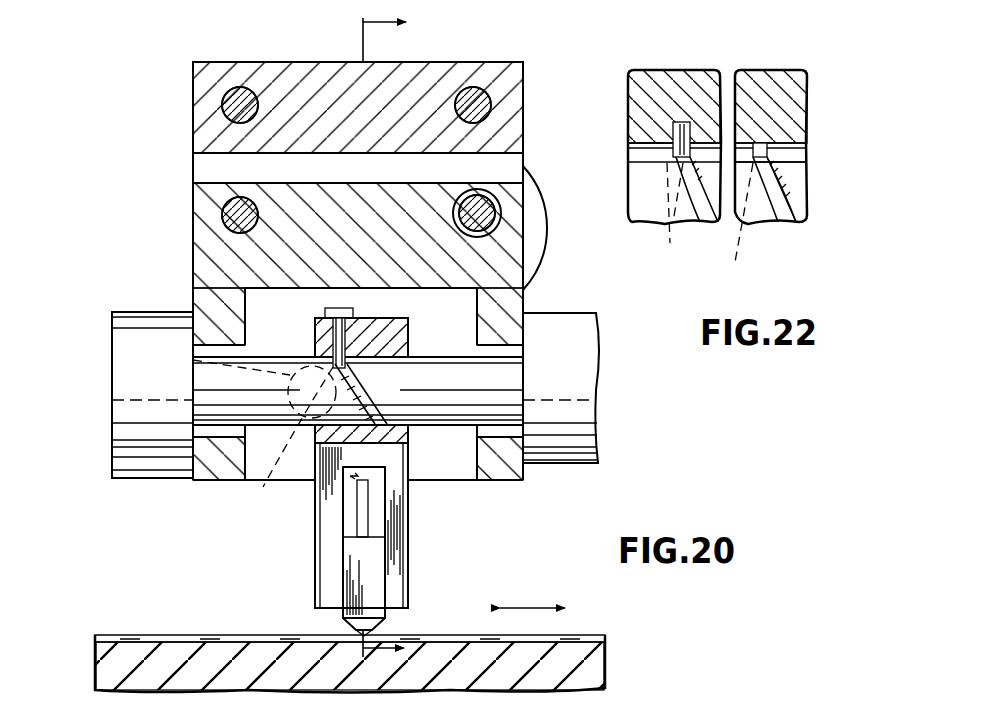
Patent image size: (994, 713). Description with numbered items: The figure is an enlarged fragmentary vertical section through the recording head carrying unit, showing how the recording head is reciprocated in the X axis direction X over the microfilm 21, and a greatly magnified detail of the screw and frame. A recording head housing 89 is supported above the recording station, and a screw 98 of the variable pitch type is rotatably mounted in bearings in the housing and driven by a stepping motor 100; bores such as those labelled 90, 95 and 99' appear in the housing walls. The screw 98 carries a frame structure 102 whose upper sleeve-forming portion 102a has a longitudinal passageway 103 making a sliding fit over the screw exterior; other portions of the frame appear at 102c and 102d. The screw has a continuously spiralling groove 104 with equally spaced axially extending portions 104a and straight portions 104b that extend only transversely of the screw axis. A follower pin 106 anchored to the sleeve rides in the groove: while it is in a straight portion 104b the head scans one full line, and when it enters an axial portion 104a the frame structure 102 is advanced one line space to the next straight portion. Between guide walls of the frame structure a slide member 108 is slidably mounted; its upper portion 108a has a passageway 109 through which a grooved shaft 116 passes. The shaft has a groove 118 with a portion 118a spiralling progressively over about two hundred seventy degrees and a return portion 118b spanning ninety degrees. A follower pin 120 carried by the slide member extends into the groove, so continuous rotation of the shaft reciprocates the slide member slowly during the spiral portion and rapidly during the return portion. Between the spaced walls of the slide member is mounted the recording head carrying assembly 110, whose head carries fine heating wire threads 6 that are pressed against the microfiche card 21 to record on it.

In FIG. 20, the threads of heating wire material 6 is at (357, 640).
In FIG. 20, the microfilm 21 is at (371, 341).
In FIG. 20, the recording head housing 89 is at (450, 60).
In FIG. 20, the bore 90 is at (488, 100).
In FIG. 20, the bore 95 is at (238, 92).
In FIG. 20, the screw 98 is at (490, 212).
In FIG. 22, the screw 98 is at (795, 157).
In FIG. 20, the bore 99' is at (188, 213).
In FIG. 20, the stepping motor 100 is at (538, 229).
In FIG. 20, the frame structure 102 is at (525, 278).
In FIG. 22, the upper sleeve-forming portion 102a is at (790, 80).
In FIG. 20, the left block portion 102c is at (215, 286).
In FIG. 20, the right block portion 102d is at (515, 308).
In FIG. 22, the longitudinal passageway 103 is at (650, 160).
In FIG. 22, the continuously spiralling groove 104 is at (788, 212).
In FIG. 22, the axially extending portions 104a is at (718, 227).
In FIG. 22, the straight portions 104b is at (787, 197).
In FIG. 22, the follower pin 106 is at (681, 122).
In FIG. 20, the slide member 108 is at (278, 352).
In FIG. 20, the upper portion 108a is at (396, 318).
In FIG. 20, the passageway 109 is at (398, 365).
In FIG. 20, the recording head carrying assembly 110 is at (314, 548).
In FIG. 20, the grooved shaft 116 is at (452, 410).
In FIG. 20, the groove 118 is at (372, 405).
In FIG. 20, the spiralling groove portion 118a is at (193, 360).
In FIG. 20, the return groove portion 118b is at (281, 451).
In FIG. 20, the follower pin 120 is at (350, 325).
In FIG. 20, the X axis direction X is at (532, 620).